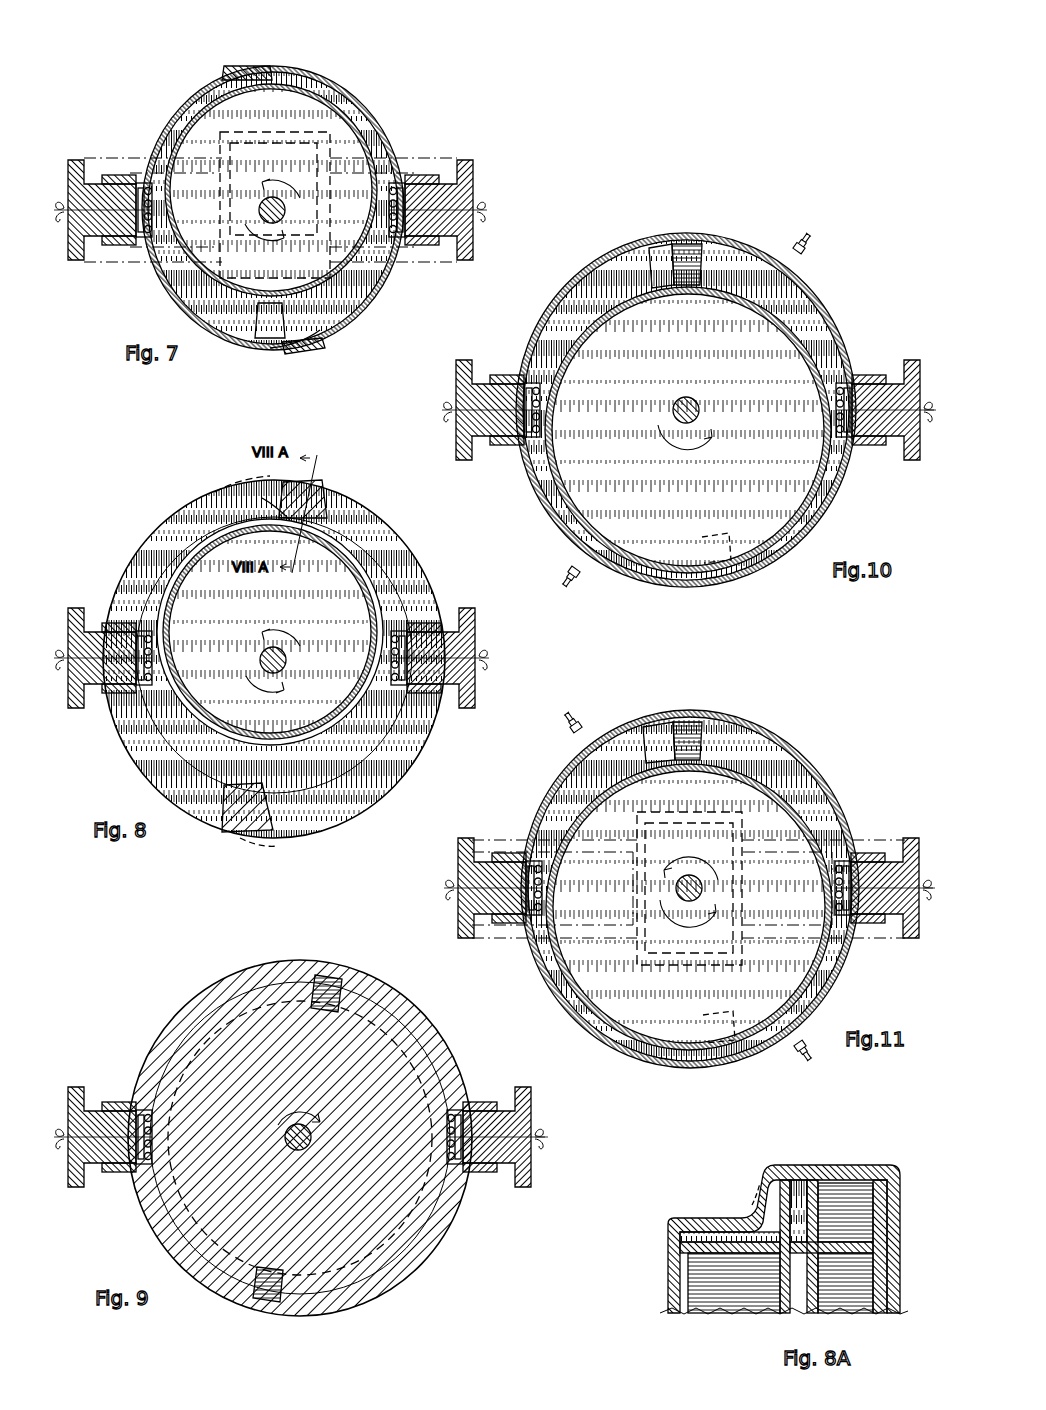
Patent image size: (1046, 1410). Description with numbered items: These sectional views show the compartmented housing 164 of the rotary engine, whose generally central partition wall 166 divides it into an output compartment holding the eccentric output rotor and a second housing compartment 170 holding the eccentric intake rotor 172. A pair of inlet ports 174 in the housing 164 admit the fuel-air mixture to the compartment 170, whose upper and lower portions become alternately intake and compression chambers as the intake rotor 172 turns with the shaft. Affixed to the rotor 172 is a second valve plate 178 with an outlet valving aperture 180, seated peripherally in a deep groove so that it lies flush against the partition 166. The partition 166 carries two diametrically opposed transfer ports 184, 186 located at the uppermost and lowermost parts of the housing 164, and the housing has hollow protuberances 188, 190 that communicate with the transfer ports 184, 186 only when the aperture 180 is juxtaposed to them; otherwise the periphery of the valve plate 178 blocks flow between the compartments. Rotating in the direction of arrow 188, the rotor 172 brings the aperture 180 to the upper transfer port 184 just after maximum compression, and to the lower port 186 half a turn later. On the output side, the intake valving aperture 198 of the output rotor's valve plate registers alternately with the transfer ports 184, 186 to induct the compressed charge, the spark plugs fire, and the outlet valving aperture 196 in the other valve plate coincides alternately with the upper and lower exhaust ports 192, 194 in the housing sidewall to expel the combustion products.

In FIG. 7, the hollow protuberance 188 is at (243, 66).
In FIG. 8, the hollow protuberance 188 is at (272, 500).
In FIG. 8A, the hollow protuberance 188 is at (750, 1228).
In FIG. 7, the inlet ports 174 is at (315, 95).
In FIG. 7, the compartmented housing 164 is at (365, 105).
In FIG. 8, the compartmented housing 164 is at (405, 553).
In FIG. 9, the compartmented housing 164 is at (450, 1047).
In FIG. 8A, the compartmented housing 164 is at (899, 1210).
In FIG. 7, the second housing compartment 170 is at (342, 305).
In FIG. 7, the hollow protuberance 190 is at (300, 352).
In FIG. 8, the hollow protuberance 190 is at (222, 812).
In FIG. 8, the valving aperture 180 is at (215, 492).
In FIG. 9, the valving aperture 180 is at (265, 962).
In FIG. 8A, the valving aperture 180 is at (752, 1205).
In FIG. 8, the transfer port 184 is at (345, 498).
In FIG. 9, the transfer port 184 is at (343, 992).
In FIG. 10, the transfer port 184 is at (634, 268).
In FIG. 8A, the transfer port 184 is at (800, 1183).
In FIG. 8, the second valve plate 178 is at (392, 527).
In FIG. 8, the eccentric intake rotor 172 is at (335, 735).
In FIG. 8, the transfer port 186 is at (278, 846).
In FIG. 9, the transfer port 186 is at (275, 1292).
In FIG. 10, the transfer port 186 is at (683, 586).
In FIG. 9, the central partition wall 166 is at (395, 1030).
In FIG. 8A, the central partition wall 166 is at (790, 1306).
In FIG. 10, the intake valving aperture 198 is at (705, 274).
In FIG. 11, the outlet valving aperture 196 is at (705, 744).
In FIG. 11, the exhaust port 192 is at (642, 736).
In FIG. 11, the exhaust port 194 is at (725, 1016).